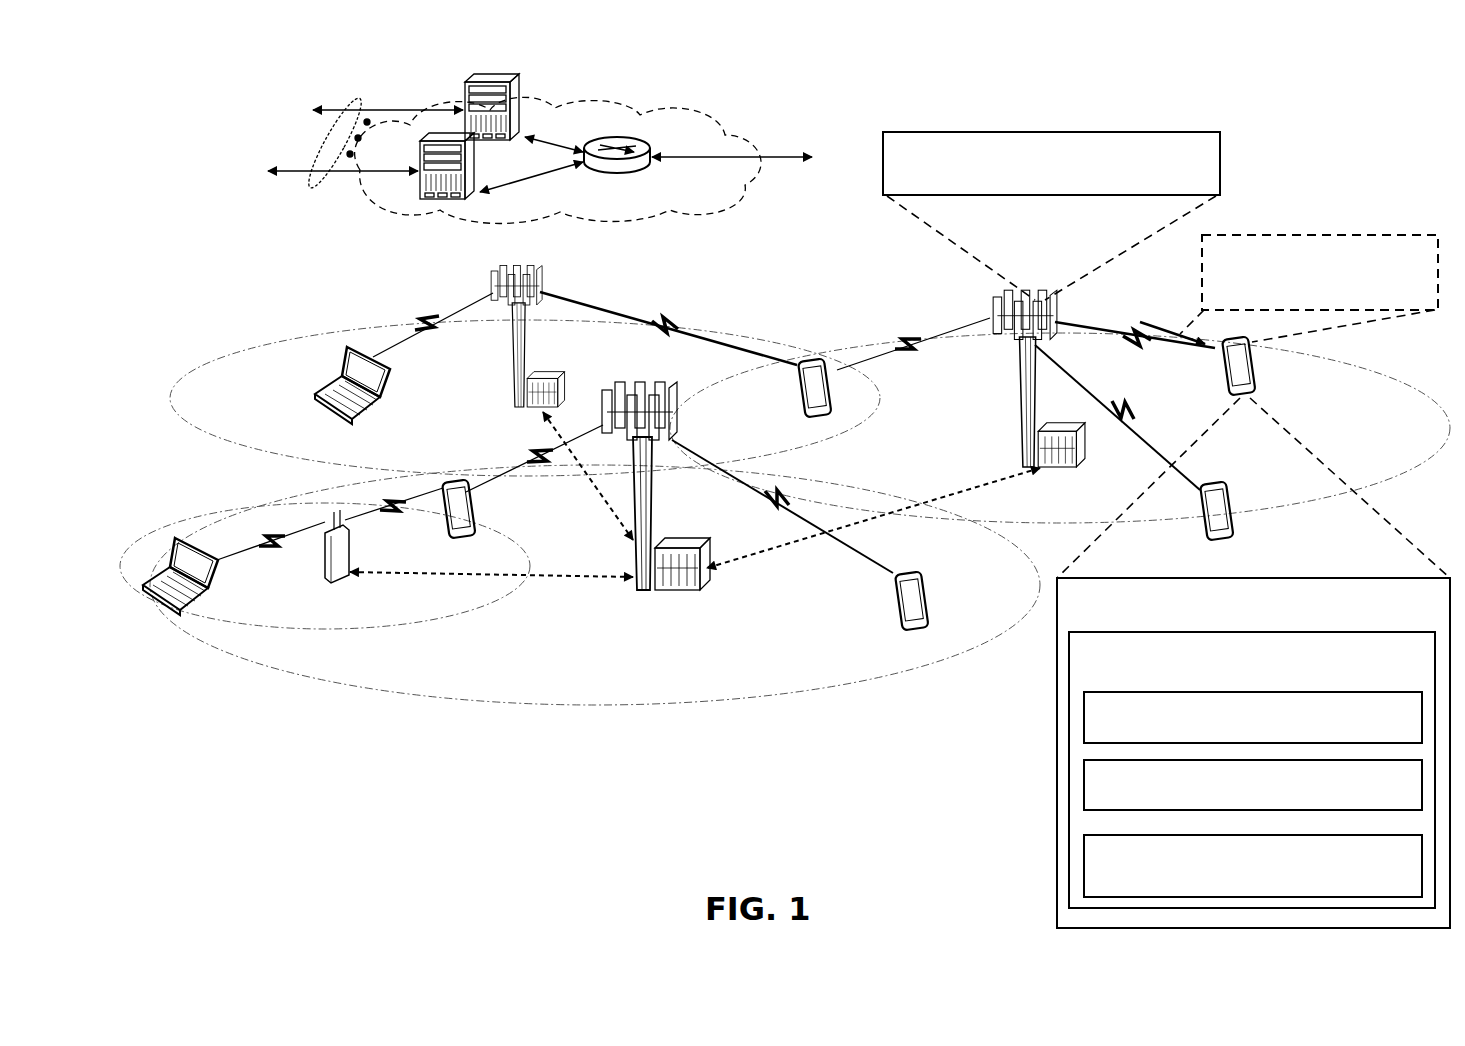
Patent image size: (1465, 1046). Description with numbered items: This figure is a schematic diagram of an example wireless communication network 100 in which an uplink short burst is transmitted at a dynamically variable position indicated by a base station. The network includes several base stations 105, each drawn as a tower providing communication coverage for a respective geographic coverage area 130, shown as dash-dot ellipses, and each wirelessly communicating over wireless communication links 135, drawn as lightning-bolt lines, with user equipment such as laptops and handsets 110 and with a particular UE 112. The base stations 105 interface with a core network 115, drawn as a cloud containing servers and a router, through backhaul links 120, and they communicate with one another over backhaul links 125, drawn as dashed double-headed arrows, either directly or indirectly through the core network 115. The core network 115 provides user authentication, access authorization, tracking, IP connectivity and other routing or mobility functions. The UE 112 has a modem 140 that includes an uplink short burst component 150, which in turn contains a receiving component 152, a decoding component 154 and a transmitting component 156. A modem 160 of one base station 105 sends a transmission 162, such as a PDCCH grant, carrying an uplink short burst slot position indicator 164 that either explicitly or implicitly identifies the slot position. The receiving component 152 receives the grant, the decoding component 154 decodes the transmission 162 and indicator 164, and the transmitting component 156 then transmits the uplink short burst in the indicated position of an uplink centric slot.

The wireless communication network 100 is at (150, 118).
The base station 105 is at (515, 380).
The UE 110 is at (370, 415).
The user equipment 112 is at (1250, 396).
The core network 115 is at (648, 218).
The backhaul link 120 is at (327, 184).
The backhaul link 125 is at (913, 492).
The geographic coverage area 130 is at (225, 460).
The wireless communication link 135 is at (430, 318).
The modem 140 is at (1253, 663).
The uplink short burst component 150 is at (1252, 770).
The receiving component 152 is at (1253, 717).
The decoding component 154 is at (1253, 785).
The transmitting component 156 is at (1253, 866).
The modem 160 is at (1051, 216).
The transmission 162 is at (1173, 332).
The uplink short burst slot position indicator 164 is at (1309, 288).